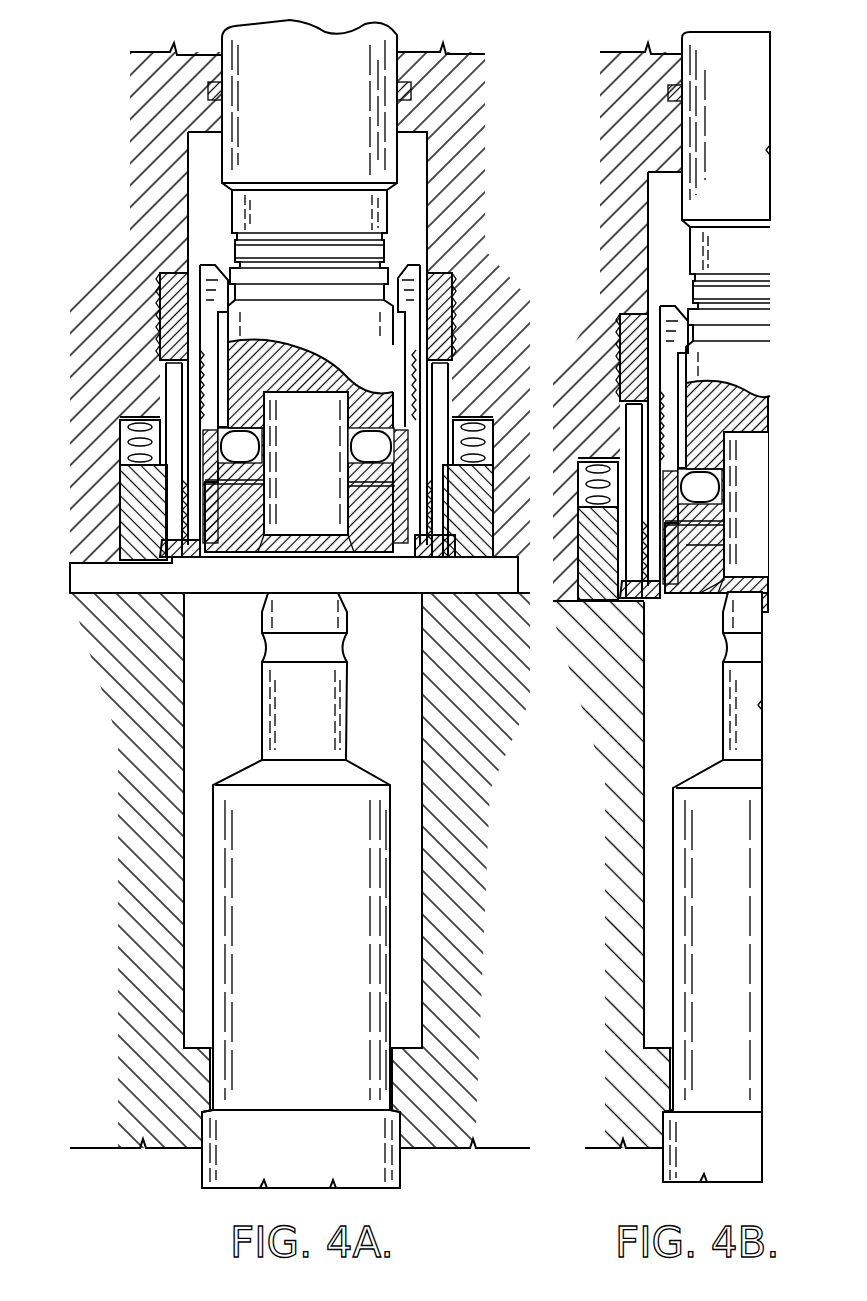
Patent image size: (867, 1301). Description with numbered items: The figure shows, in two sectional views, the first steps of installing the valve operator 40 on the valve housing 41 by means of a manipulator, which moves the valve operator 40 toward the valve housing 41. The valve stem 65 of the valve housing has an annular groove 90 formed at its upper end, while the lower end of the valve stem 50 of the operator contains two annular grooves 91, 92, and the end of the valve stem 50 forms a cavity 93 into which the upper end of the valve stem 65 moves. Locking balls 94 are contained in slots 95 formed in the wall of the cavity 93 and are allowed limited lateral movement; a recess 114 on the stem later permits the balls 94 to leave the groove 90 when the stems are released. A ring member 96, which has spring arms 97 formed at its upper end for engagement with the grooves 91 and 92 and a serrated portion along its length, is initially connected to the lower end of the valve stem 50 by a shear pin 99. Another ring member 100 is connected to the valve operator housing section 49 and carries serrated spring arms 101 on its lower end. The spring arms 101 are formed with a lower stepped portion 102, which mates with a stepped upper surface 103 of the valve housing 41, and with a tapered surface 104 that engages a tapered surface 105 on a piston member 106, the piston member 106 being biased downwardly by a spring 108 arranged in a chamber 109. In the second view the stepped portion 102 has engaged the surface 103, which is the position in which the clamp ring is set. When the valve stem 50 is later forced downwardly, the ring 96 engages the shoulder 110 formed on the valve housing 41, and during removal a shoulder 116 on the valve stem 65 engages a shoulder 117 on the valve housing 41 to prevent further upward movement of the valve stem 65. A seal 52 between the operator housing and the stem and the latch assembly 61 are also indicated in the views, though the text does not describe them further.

In FIG. 4A, the valve operator 40 is at (176, 66).
In FIG. 4A, the valve housing 41 is at (160, 680).
In FIG. 4B, the valve housing 41 is at (630, 705).
In FIG. 4A, the valve operator housing section 49 is at (160, 128).
In FIG. 4B, the valve operator housing section 49 is at (617, 321).
In FIG. 4A, the valve stem 50 is at (297, 111).
In FIG. 4B, the valve stem 50 is at (720, 132).
In FIG. 4A, the seal ring 52 is at (412, 95).
In FIG. 4B, the seal ring 52 is at (666, 92).
In FIG. 4A, the latch assembly 61 is at (196, 256).
In FIG. 4B, the latch assembly 61 is at (658, 296).
In FIG. 4A, the valve stem 65 is at (288, 884).
In FIG. 4B, the valve stem 65 is at (710, 891).
In FIG. 4A, the annular groove 90 is at (318, 650).
In FIG. 4B, the annular groove 90 is at (738, 650).
In FIG. 4A, the annular groove 91 is at (378, 250).
In FIG. 4B, the annular groove 91 is at (752, 290).
In FIG. 4A, the annular groove 92 is at (300, 283).
In FIG. 4B, the annular groove 92 is at (748, 340).
In FIG. 4A, the cavity 93 is at (290, 521).
In FIG. 4B, the cavity 93 is at (746, 550).
In FIG. 4A, the locking balls 94 is at (368, 445).
In FIG. 4B, the locking balls 94 is at (712, 487).
In FIG. 4A, the slots 95 is at (248, 428).
In FIG. 4B, the slots 95 is at (708, 467).
In FIG. 4A, the ring member 96 is at (212, 542).
In FIG. 4B, the ring member 96 is at (672, 598).
In FIG. 4A, the spring arms 97 is at (212, 295).
In FIG. 4B, the spring arms 97 is at (656, 332).
In FIG. 4A, the shear pin 99 is at (245, 481).
In FIG. 4B, the shear pin 99 is at (726, 521).
In FIG. 4A, the ring member 100 is at (162, 312).
In FIG. 4B, the ring member 100 is at (618, 345).
In FIG. 4A, the spring arms 101 is at (178, 505).
In FIG. 4B, the spring arms 101 is at (630, 445).
In FIG. 4A, the stepped portion 102 is at (170, 555).
In FIG. 4B, the stepped portion 102 is at (618, 602).
In FIG. 4A, the stepped upper surface 103 is at (185, 597).
In FIG. 4B, the stepped upper surface 103 is at (650, 600).
In FIG. 4A, the tapered surface 104 is at (445, 536).
In FIG. 4A, the tapered surface 105 is at (294, 575).
In FIG. 4A, the piston member 106 is at (470, 490).
In FIG. 4B, the piston member 106 is at (598, 586).
In FIG. 4A, the spring 108 is at (125, 437).
In FIG. 4B, the spring 108 is at (598, 484).
In FIG. 4A, the chamber 109 is at (458, 425).
In FIG. 4A, the shoulder 110 is at (198, 1042).
In FIG. 4B, the shoulder 110 is at (655, 1045).
In FIG. 4B, the recess 114 is at (692, 575).
In FIG. 4A, the shoulder 116 is at (292, 1108).
In FIG. 4B, the shoulder 116 is at (733, 1108).
In FIG. 4A, the shoulder 117 is at (205, 1115).
In FIG. 4B, the shoulder 117 is at (670, 1116).